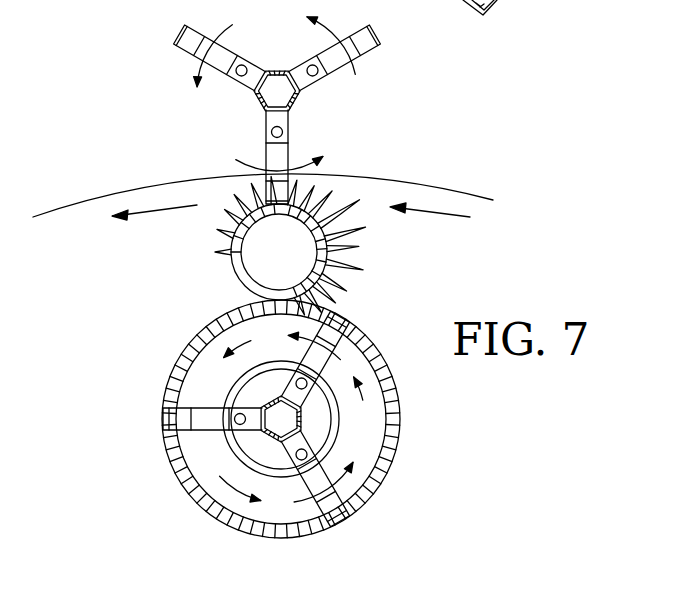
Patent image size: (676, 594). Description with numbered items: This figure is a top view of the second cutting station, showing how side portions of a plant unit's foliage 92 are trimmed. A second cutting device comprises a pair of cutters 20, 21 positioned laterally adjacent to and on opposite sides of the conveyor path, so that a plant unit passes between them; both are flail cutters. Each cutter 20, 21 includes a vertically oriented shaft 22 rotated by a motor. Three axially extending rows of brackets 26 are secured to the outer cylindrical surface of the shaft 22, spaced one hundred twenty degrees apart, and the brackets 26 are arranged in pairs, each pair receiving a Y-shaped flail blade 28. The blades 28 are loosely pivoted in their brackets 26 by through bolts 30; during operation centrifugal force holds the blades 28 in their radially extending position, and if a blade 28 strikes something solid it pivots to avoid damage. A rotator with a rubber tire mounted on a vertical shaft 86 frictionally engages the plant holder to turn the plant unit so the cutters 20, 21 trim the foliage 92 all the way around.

The cutter 20 is at (286, 108).
The cutter 21 is at (208, 398).
The vertically oriented shaft 22 is at (254, 104).
The brackets 26 is at (289, 131).
The Y-shaped flail blade 28 is at (205, 58).
The through bolt 30 is at (249, 62).
The vertical shaft 86 is at (122, 9).
The foliage 92 is at (362, 268).